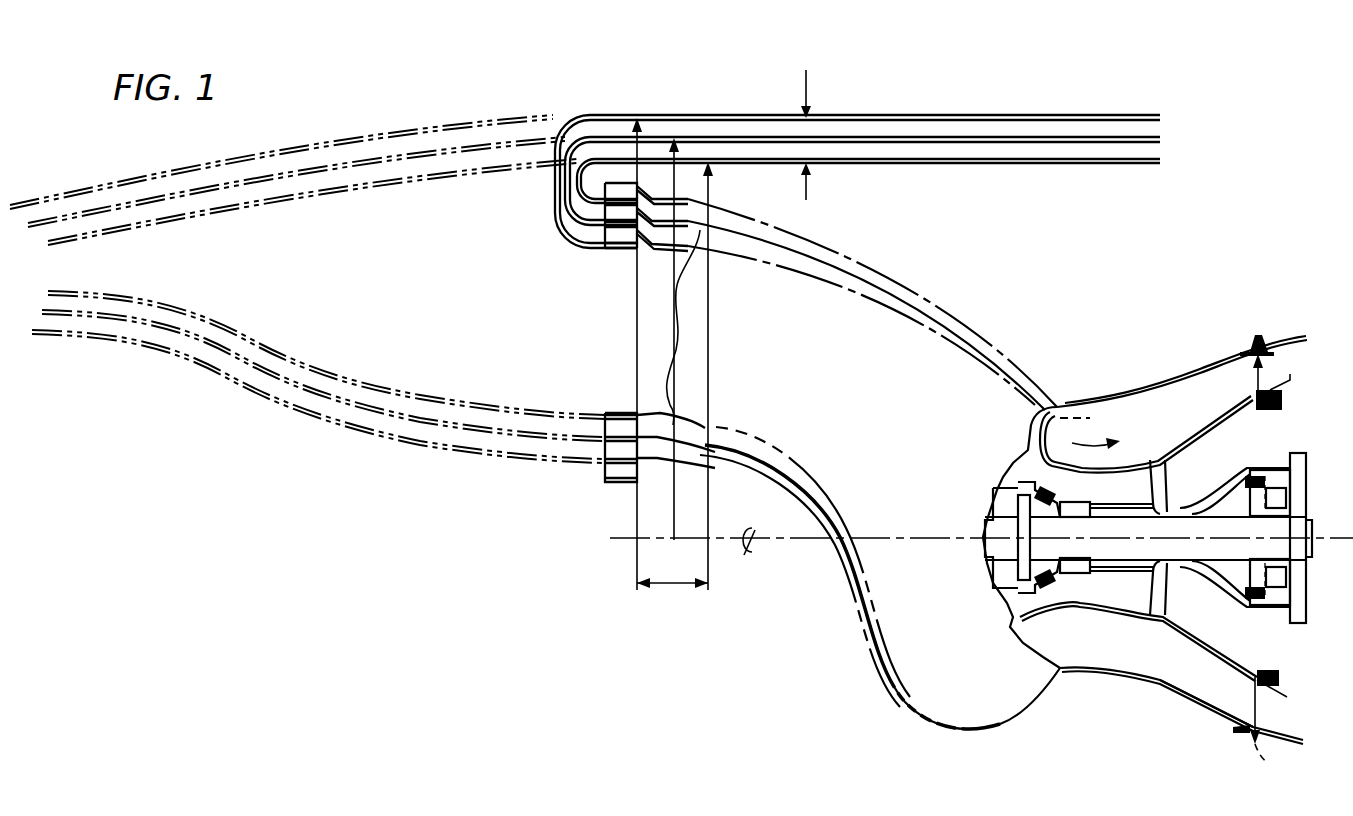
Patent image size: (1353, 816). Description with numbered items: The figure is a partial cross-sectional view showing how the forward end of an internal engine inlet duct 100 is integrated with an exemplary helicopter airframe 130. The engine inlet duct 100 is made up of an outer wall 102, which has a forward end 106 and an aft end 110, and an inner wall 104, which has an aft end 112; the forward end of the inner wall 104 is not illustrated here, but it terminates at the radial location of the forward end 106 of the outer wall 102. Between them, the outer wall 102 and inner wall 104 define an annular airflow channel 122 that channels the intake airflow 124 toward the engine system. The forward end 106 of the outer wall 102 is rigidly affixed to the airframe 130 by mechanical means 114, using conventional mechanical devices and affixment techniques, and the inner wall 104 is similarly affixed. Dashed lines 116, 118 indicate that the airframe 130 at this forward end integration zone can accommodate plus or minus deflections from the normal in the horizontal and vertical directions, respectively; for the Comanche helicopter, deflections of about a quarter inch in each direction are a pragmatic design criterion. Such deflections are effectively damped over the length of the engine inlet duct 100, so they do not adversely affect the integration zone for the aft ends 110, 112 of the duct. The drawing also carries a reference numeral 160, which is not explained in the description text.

The internal engine inlet duct 100 is at (1068, 396).
The outer wall 102 is at (1158, 388).
The inner wall 104 is at (1208, 413).
The forward end of the outer wall 106 is at (622, 180).
The aft end of the outer wall 110 is at (1250, 342).
The aft end of the inner wall 112 is at (1250, 382).
The mechanical means 114 is at (590, 248).
The dashed lines indicating horizontal deflections 116 is at (676, 588).
The dashed lines indicating vertical deflections 118 is at (813, 124).
The annular airflow channel 122 is at (1177, 682).
The intake airflow 124 is at (1088, 444).
The helicopter airframe 130 is at (596, 128).
The transition duct wall 160 is at (812, 542).